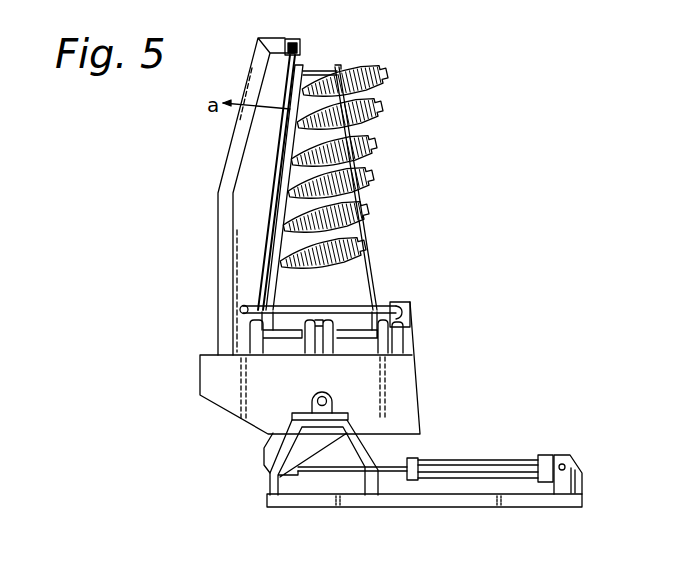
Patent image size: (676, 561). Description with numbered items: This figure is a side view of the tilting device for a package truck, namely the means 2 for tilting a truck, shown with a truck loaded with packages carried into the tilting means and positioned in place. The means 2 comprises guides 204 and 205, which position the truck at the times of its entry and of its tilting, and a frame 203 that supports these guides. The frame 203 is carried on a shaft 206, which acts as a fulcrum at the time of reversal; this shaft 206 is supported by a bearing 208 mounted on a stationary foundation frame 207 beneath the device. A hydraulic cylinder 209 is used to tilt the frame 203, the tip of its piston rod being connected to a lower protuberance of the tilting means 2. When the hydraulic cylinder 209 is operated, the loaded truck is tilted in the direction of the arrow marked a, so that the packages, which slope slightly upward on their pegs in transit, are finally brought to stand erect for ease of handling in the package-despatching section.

The means for tilting a truck 2 is at (206, 376).
The frame 203 is at (226, 177).
The guide 204 is at (301, 45).
The guide 205 is at (243, 304).
The shaft 206 is at (323, 392).
The stationary foundation frame 207 is at (272, 488).
The bearing 208 is at (334, 406).
The hydraulic cylinder 209 is at (457, 459).